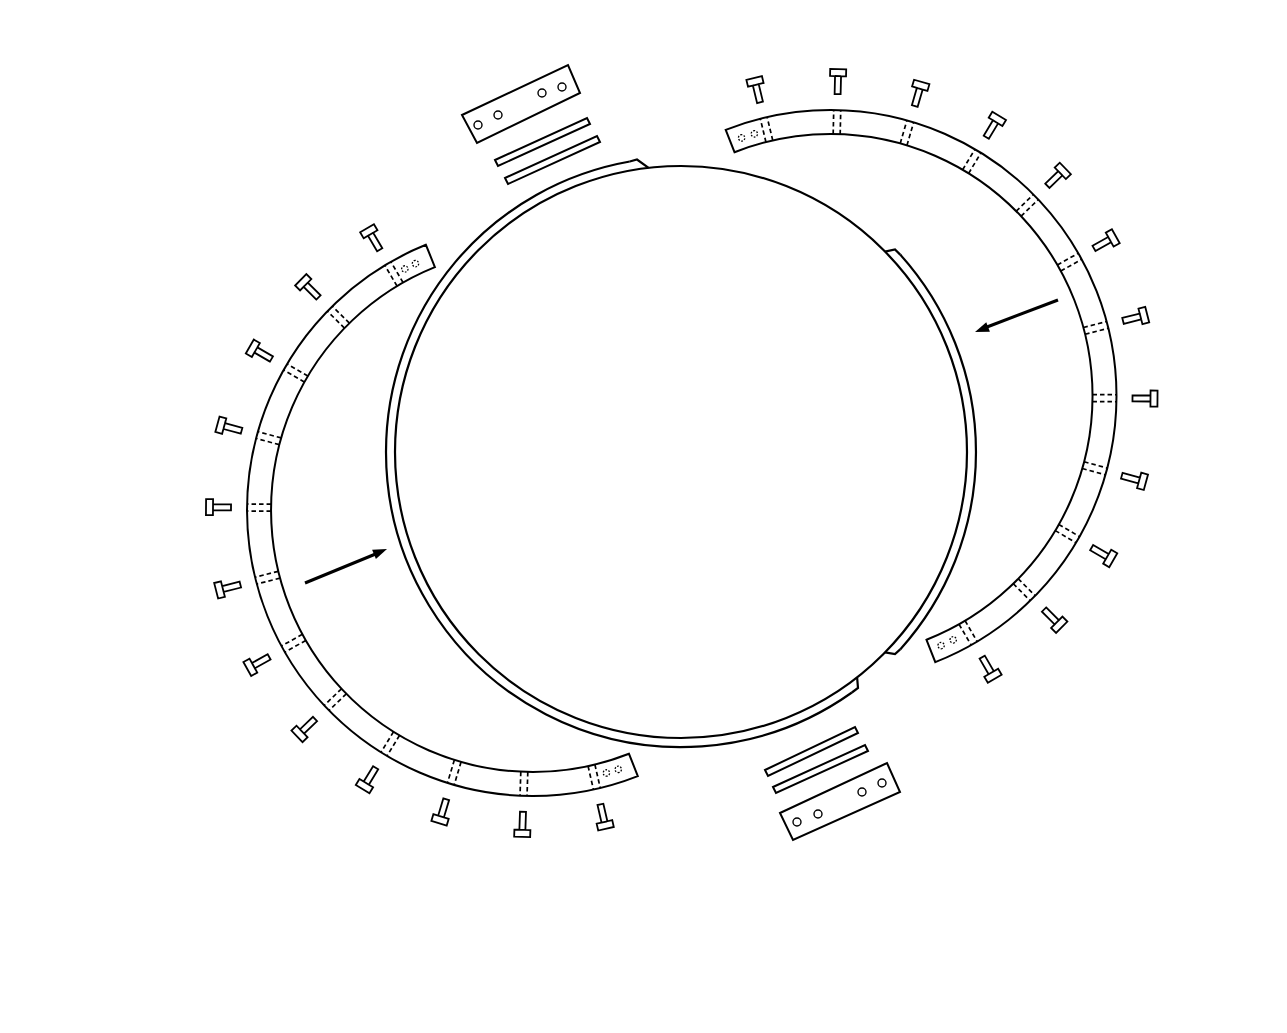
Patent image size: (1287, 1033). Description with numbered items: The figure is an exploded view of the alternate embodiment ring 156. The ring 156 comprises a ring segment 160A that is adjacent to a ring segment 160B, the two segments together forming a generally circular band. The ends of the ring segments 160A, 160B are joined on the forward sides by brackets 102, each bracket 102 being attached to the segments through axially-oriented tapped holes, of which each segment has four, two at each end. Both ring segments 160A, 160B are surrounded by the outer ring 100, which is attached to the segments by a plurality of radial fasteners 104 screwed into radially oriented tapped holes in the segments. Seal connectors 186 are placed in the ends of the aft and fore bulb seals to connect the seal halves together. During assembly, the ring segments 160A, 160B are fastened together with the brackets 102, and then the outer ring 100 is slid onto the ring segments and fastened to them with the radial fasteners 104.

The outer ring 100 is at (912, 278).
The bracket 102 is at (465, 129).
The radial fastener 104 is at (370, 224).
The alternate embodiment ring 156 is at (1195, 142).
The ring segment 160A is at (1005, 181).
The ring segment 160B is at (312, 342).
The seal connector 186 is at (588, 120).